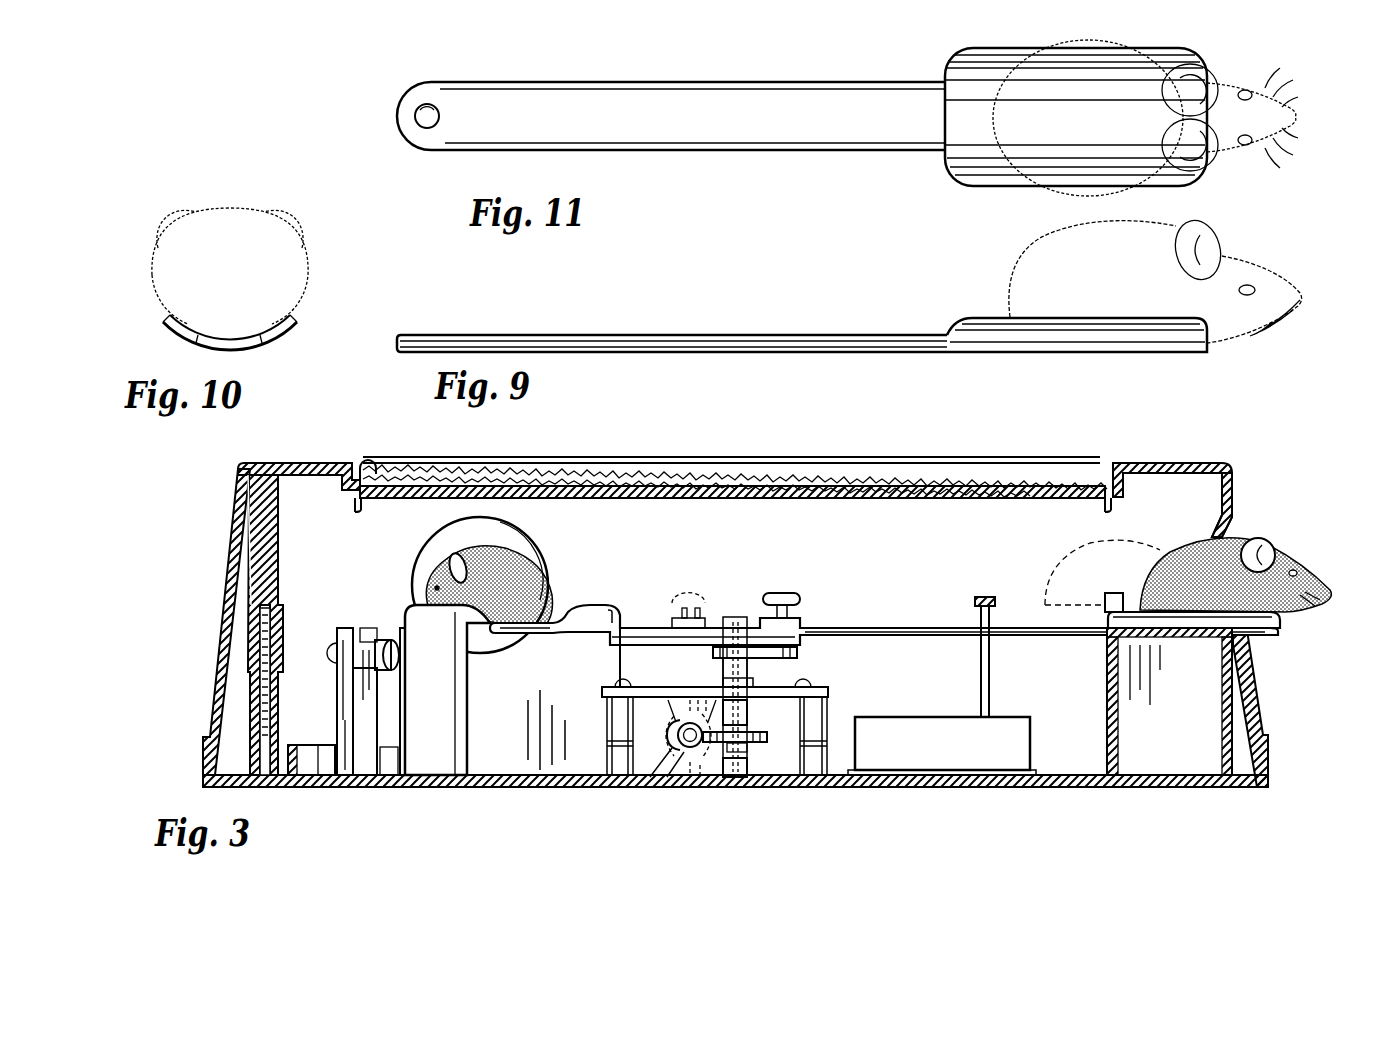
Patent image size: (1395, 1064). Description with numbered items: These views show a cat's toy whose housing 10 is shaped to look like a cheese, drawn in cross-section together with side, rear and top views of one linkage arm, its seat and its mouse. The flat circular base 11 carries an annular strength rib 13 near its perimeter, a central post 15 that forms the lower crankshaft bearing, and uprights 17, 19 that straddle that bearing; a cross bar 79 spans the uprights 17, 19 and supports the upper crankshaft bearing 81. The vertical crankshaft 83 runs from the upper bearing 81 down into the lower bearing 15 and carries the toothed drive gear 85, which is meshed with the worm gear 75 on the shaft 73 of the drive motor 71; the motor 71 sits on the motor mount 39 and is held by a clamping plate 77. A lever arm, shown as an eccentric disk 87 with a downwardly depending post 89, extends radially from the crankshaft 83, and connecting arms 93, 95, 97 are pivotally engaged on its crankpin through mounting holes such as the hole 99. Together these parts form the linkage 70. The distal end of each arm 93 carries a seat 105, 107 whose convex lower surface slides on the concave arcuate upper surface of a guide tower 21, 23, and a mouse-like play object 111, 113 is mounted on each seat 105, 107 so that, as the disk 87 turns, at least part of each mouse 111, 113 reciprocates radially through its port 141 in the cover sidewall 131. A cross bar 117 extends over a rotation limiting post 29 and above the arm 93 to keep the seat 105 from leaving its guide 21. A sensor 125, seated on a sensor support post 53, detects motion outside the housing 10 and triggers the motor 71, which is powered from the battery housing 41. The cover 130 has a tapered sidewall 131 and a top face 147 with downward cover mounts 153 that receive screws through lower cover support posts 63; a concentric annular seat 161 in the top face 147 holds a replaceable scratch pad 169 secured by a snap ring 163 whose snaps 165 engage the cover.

In FIG. 3, the housing 10 is at (1270, 790).
In FIG. 3, the base 11 is at (790, 782).
In FIG. 3, the strength rib 13 is at (308, 762).
In FIG. 3, the post 15 is at (728, 768).
In FIG. 3, the upright 17 is at (615, 762).
In FIG. 3, the upright 19 is at (818, 760).
In FIG. 3, the guide 21 is at (1190, 713).
In FIG. 3, the guide 23 is at (555, 725).
In FIG. 3, the rotation limiting post 29 is at (990, 690).
In FIG. 3, the motor mount 39 is at (702, 768).
In FIG. 3, the battery housing 41 is at (985, 762).
In FIG. 3, the sensor support post 53 is at (358, 692).
In FIG. 3, the lower cover support post 63 is at (258, 682).
In FIG. 3, the linkage 70 is at (732, 679).
In FIG. 3, the drive motor 71 is at (660, 762).
In FIG. 3, the motor shaft 73 is at (690, 750).
In FIG. 3, the worm gear 75 is at (676, 748).
In FIG. 3, the clamping plate 77 is at (692, 685).
In FIG. 3, the cross bar 79 is at (828, 692).
In FIG. 3, the upper crankshaft bearing 81 is at (750, 720).
In FIG. 3, the crankshaft 83 is at (737, 650).
In FIG. 3, the toothed drive gear 85 is at (752, 744).
In FIG. 3, the lever arm 87 is at (800, 642).
In FIG. 3, the post 89 is at (752, 662).
In FIG. 11, the connecting arm 93 is at (600, 108).
In FIG. 9, the connecting arm 93 is at (703, 330).
In FIG. 10, the connecting arm 93 is at (250, 352).
In FIG. 3, the connecting arm 93 is at (905, 626).
In FIG. 3, the connecting arm 95 is at (655, 625).
In FIG. 3, the connecting arm 97 is at (624, 652).
In FIG. 11, the mounting hole 99 is at (436, 106).
In FIG. 11, the seat 105 is at (958, 62).
In FIG. 9, the seat 105 is at (968, 325).
In FIG. 10, the seat 105 is at (292, 326).
In FIG. 3, the seat 105 is at (1255, 624).
In FIG. 3, the seat 107 is at (552, 640).
In FIG. 11, the play object 111 is at (1238, 82).
In FIG. 9, the play object 111 is at (1245, 267).
In FIG. 10, the play object 111 is at (240, 222).
In FIG. 3, the play object 111 is at (1285, 566).
In FIG. 3, the play object 113 is at (545, 590).
In FIG. 3, the cross bar 117 is at (984, 596).
In FIG. 3, the sensor 125 is at (388, 650).
In FIG. 3, the cover 130 is at (1236, 462).
In FIG. 3, the cover sidewall 131 is at (232, 580).
In FIG. 3, the port 141 is at (426, 548).
In FIG. 3, the cover top face 147 is at (772, 490).
In FIG. 3, the cover mount 153 is at (265, 537).
In FIG. 3, the annular seat 161 is at (905, 480).
In FIG. 3, the snap ring 163 is at (368, 462).
In FIG. 3, the snaps 165 is at (357, 506).
In FIG. 3, the scratch pad 169 is at (672, 475).